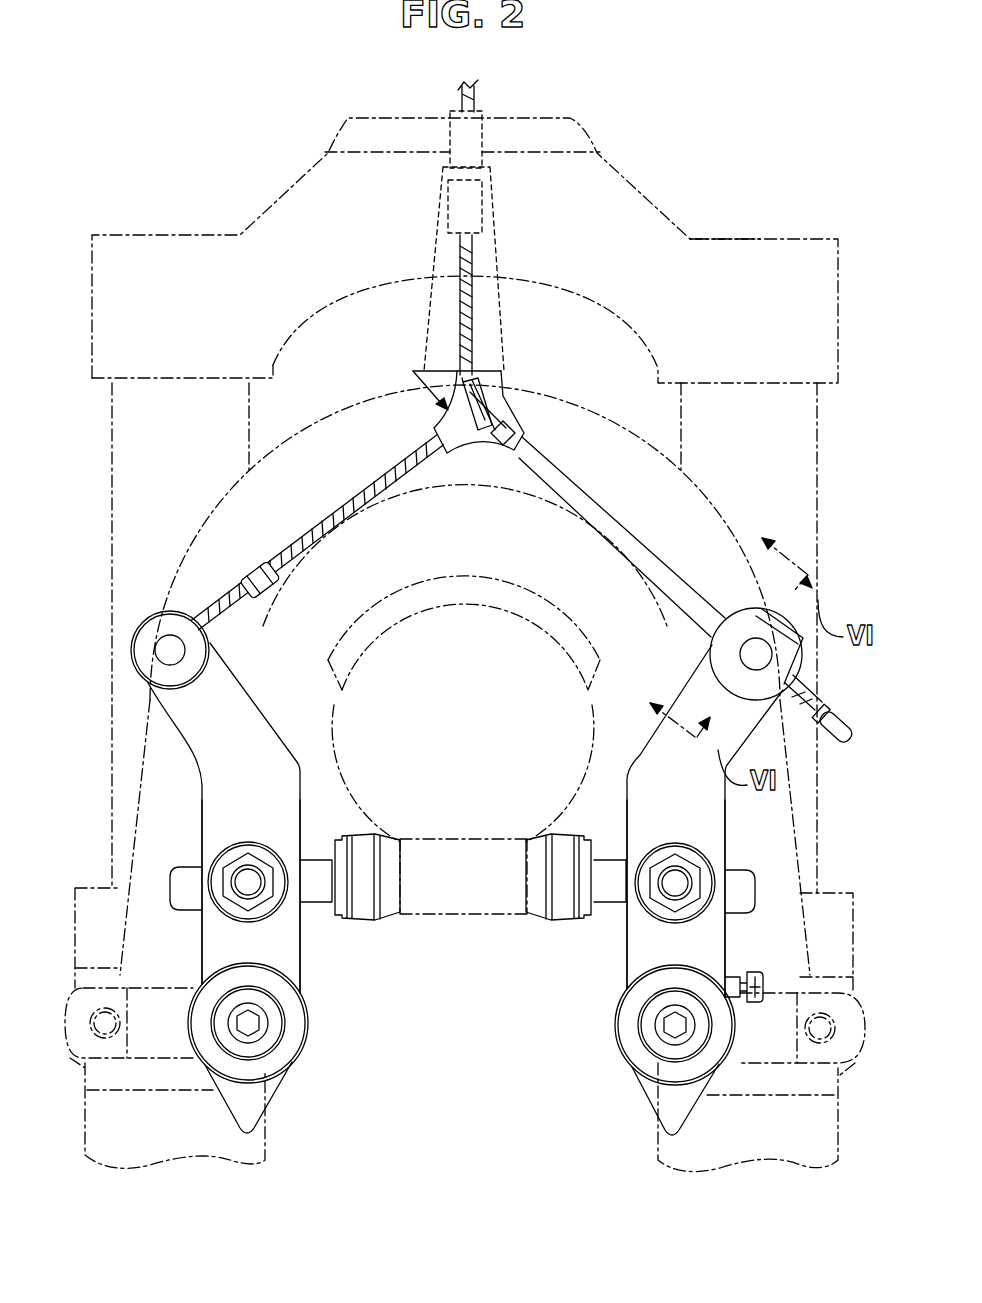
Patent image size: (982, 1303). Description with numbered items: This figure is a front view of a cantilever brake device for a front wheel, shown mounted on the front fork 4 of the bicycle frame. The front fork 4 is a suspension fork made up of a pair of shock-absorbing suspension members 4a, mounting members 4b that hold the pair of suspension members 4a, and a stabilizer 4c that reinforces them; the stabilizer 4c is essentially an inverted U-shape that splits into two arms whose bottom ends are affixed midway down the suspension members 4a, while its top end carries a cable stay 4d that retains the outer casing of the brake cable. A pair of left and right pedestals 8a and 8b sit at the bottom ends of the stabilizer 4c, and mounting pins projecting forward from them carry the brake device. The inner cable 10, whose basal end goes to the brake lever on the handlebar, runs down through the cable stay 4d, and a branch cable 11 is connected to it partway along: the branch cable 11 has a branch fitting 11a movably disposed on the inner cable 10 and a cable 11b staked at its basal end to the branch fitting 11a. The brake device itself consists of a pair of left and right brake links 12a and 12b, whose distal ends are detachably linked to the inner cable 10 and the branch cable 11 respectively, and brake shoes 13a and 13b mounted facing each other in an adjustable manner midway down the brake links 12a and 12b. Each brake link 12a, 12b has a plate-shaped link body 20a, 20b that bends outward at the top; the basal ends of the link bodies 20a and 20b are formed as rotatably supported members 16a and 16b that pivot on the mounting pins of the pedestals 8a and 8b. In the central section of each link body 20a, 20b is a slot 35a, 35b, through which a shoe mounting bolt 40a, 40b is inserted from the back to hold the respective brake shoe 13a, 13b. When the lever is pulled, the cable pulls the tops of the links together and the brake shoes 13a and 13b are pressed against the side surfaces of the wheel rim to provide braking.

The front fork 4 is at (693, 213).
The suspension members 4a is at (108, 465).
The mounting members 4b is at (720, 238).
The stabilizer 4c is at (510, 350).
The cable stay 4d is at (491, 214).
The pedestal 8a is at (742, 1063).
The pedestal 8b is at (190, 1062).
The inner cable 10 is at (468, 312).
The branch cable 11 is at (336, 492).
The branch fitting 11a is at (520, 412).
The cable 11b is at (392, 472).
The brake link 12a is at (740, 722).
The brake link 12b is at (230, 710).
The brake shoe 13a is at (571, 940).
The brake shoe 13b is at (320, 922).
The rotatably supported member 16a is at (622, 1058).
The rotatably supported member 16b is at (303, 1059).
The link body 20a is at (707, 800).
The link body 20b is at (223, 756).
The slot 35a is at (652, 832).
The slot 35b is at (258, 835).
The shoe mounting bolt 40a is at (677, 885).
The shoe mounting bolt 40b is at (246, 884).